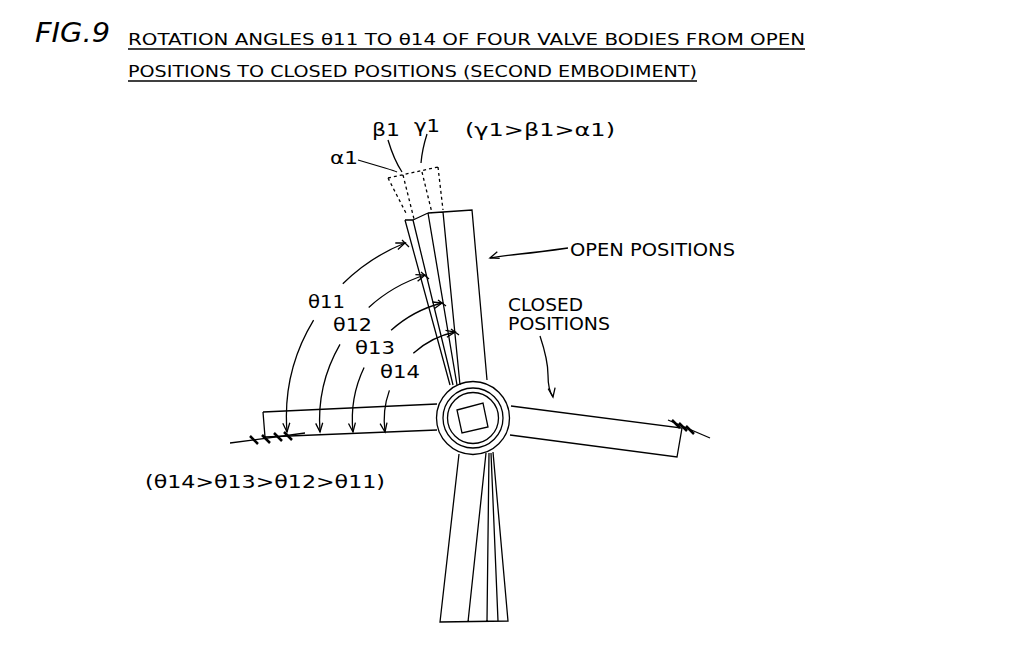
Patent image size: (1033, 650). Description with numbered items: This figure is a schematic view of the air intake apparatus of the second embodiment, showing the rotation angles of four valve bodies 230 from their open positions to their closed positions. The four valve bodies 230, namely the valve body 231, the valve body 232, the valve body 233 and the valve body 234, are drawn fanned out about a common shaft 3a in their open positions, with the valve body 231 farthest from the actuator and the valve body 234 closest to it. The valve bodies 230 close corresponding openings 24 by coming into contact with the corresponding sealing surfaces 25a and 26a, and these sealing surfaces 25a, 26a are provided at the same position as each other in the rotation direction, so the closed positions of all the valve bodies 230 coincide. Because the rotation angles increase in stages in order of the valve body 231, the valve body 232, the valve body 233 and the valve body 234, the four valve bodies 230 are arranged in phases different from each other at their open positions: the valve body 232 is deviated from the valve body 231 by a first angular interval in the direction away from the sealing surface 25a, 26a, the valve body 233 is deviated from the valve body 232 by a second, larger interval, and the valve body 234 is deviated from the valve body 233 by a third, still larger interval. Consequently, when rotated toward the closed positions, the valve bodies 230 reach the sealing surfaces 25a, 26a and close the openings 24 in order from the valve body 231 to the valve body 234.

The valve body 231 is at (408, 233).
The valve body 232 is at (408, 223).
The valve body 233 is at (437, 217).
The valve body 234 is at (468, 225).
The valve bodies 230 is at (605, 447).
The opening 24 is at (617, 397).
The shaft 3a is at (466, 424).
The sealing surface 25a is at (240, 440).
The sealing surface 26a is at (694, 433).